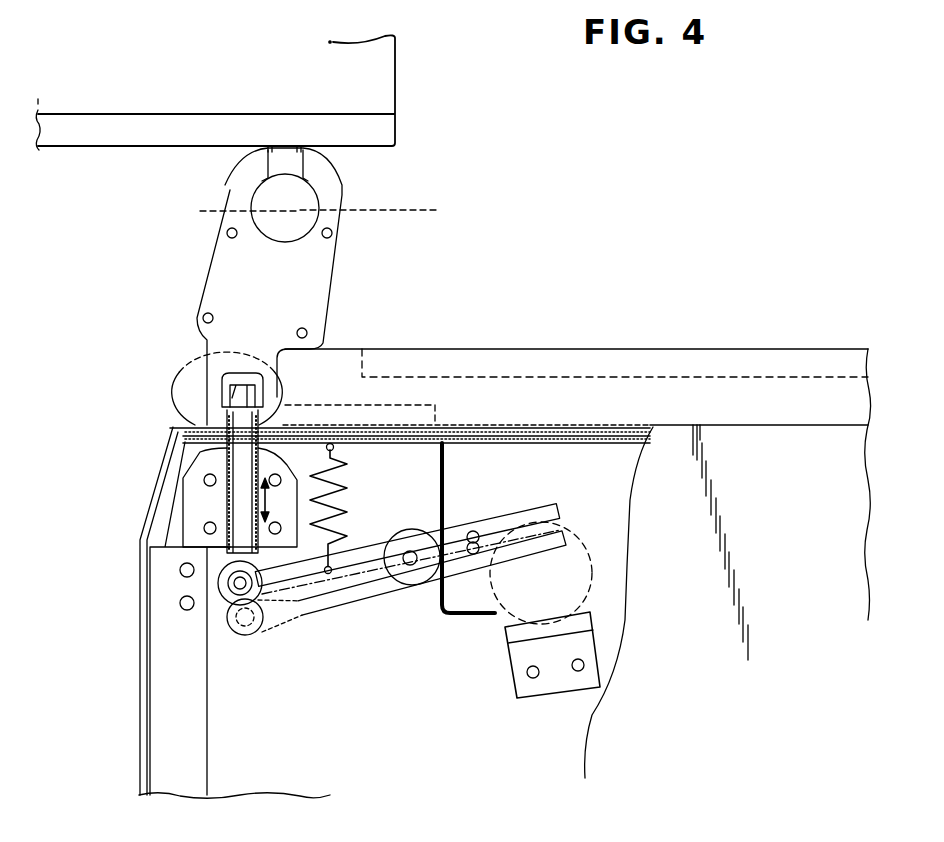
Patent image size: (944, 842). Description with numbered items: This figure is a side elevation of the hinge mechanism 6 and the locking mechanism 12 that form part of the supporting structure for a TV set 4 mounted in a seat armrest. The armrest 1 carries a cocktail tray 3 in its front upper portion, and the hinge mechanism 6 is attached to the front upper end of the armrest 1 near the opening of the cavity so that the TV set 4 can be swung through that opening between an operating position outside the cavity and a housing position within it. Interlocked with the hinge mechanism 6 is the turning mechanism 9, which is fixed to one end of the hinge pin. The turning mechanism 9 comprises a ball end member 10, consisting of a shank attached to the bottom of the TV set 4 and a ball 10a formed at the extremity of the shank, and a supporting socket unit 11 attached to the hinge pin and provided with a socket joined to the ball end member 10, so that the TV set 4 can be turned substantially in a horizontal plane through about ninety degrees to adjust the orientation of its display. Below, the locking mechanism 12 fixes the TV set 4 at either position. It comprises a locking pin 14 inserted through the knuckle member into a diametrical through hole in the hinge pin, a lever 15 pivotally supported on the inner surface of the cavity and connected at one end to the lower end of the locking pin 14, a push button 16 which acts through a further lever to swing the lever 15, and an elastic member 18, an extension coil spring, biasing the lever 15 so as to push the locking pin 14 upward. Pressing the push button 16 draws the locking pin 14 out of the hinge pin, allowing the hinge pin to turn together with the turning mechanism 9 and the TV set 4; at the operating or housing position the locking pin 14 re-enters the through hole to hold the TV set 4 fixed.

The center armrest 1 is at (790, 350).
The cocktail tray 3 is at (660, 376).
The TV set 4 is at (396, 108).
The hinge mechanism 6 is at (300, 537).
The turning mechanism 9 is at (345, 271).
The ball end member 10 is at (302, 150).
The ball 10a is at (398, 218).
The supporting socket unit 11 is at (200, 211).
The locking mechanism 12 is at (205, 400).
The locking pin 14 is at (205, 480).
The lever 15 is at (298, 590).
The push button 16 is at (510, 603).
The elastic member 18 is at (345, 505).